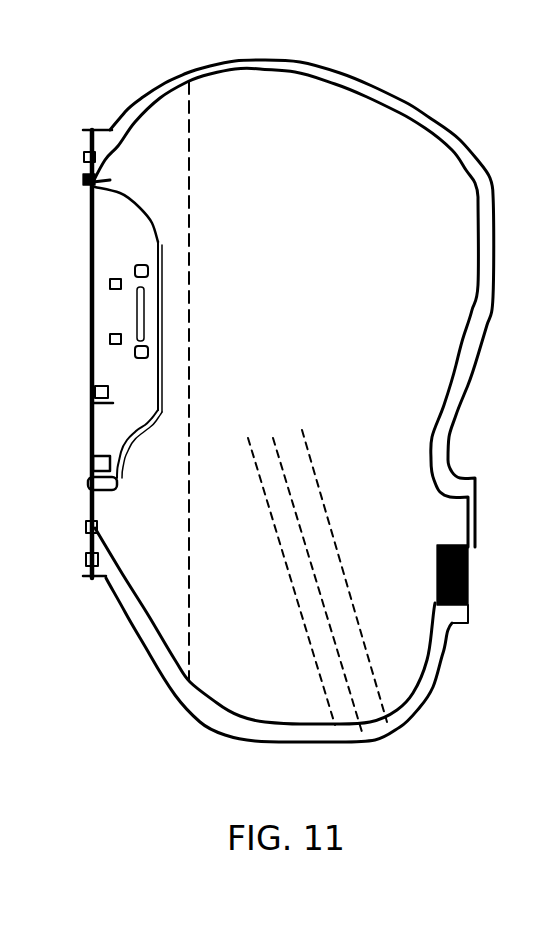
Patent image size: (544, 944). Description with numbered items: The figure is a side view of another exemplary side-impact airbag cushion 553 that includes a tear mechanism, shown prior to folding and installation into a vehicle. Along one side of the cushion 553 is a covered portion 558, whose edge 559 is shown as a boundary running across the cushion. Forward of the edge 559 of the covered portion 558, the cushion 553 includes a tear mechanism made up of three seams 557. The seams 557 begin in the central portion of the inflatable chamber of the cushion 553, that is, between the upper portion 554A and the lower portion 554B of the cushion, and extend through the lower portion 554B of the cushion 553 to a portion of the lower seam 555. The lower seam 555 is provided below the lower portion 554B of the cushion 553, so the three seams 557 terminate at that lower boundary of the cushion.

The airbag cushion 553 is at (232, 105).
The upper portion 554A is at (375, 200).
The lower portion 554B is at (265, 625).
The lower seam 555 is at (380, 728).
The seams 557 is at (268, 495).
The covered portion 558 is at (157, 521).
The edge 559 is at (188, 185).